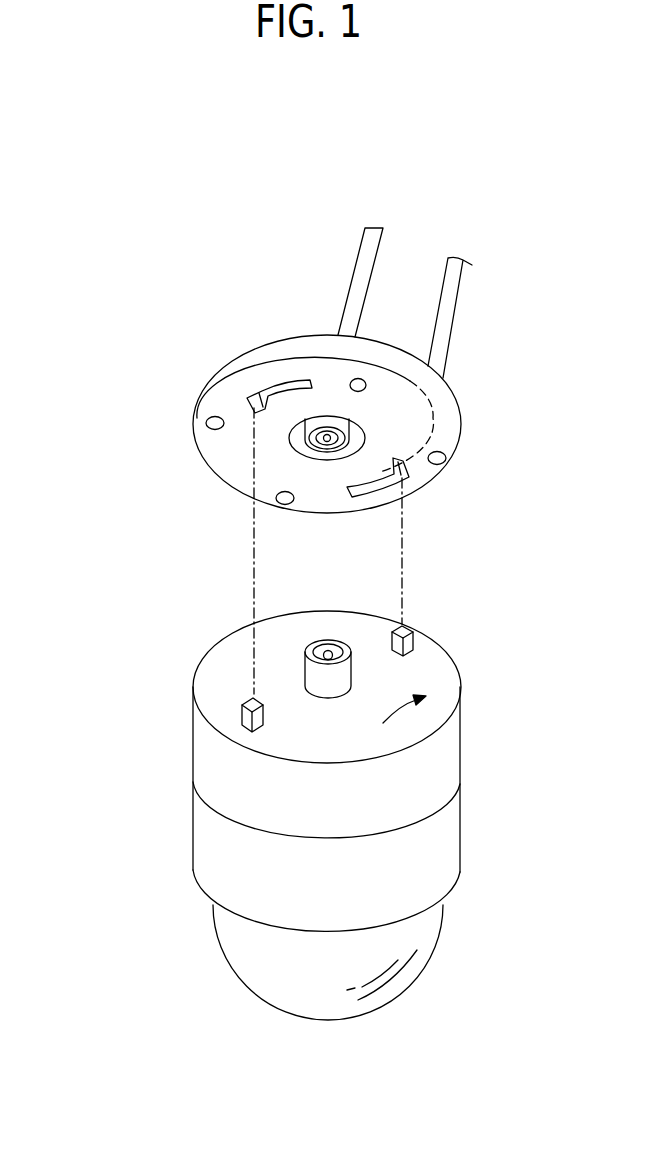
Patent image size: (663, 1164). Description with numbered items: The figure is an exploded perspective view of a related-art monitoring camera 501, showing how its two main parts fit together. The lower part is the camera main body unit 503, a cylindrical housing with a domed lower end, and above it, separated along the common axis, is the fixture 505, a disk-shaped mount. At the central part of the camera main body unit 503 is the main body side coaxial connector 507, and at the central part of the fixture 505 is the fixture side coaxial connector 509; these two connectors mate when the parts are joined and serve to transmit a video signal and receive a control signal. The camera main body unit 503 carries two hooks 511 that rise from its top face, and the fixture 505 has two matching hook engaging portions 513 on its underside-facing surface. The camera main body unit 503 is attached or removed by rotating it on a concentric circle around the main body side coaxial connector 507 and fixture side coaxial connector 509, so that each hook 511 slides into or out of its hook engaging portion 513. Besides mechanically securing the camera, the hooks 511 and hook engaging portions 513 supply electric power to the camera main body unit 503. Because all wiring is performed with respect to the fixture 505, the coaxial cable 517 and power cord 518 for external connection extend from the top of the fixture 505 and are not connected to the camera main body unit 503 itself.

The monitoring camera 501 is at (150, 268).
The camera main body unit 503 is at (147, 822).
The fixture 505 is at (216, 460).
The main body side coaxial connector 507 is at (340, 687).
The fixture side coaxial connector 509 is at (350, 421).
The hook 511 is at (414, 646).
The hook engaging portion 513 is at (273, 392).
The coaxial cable 517 is at (372, 230).
The power cord 518 is at (457, 262).